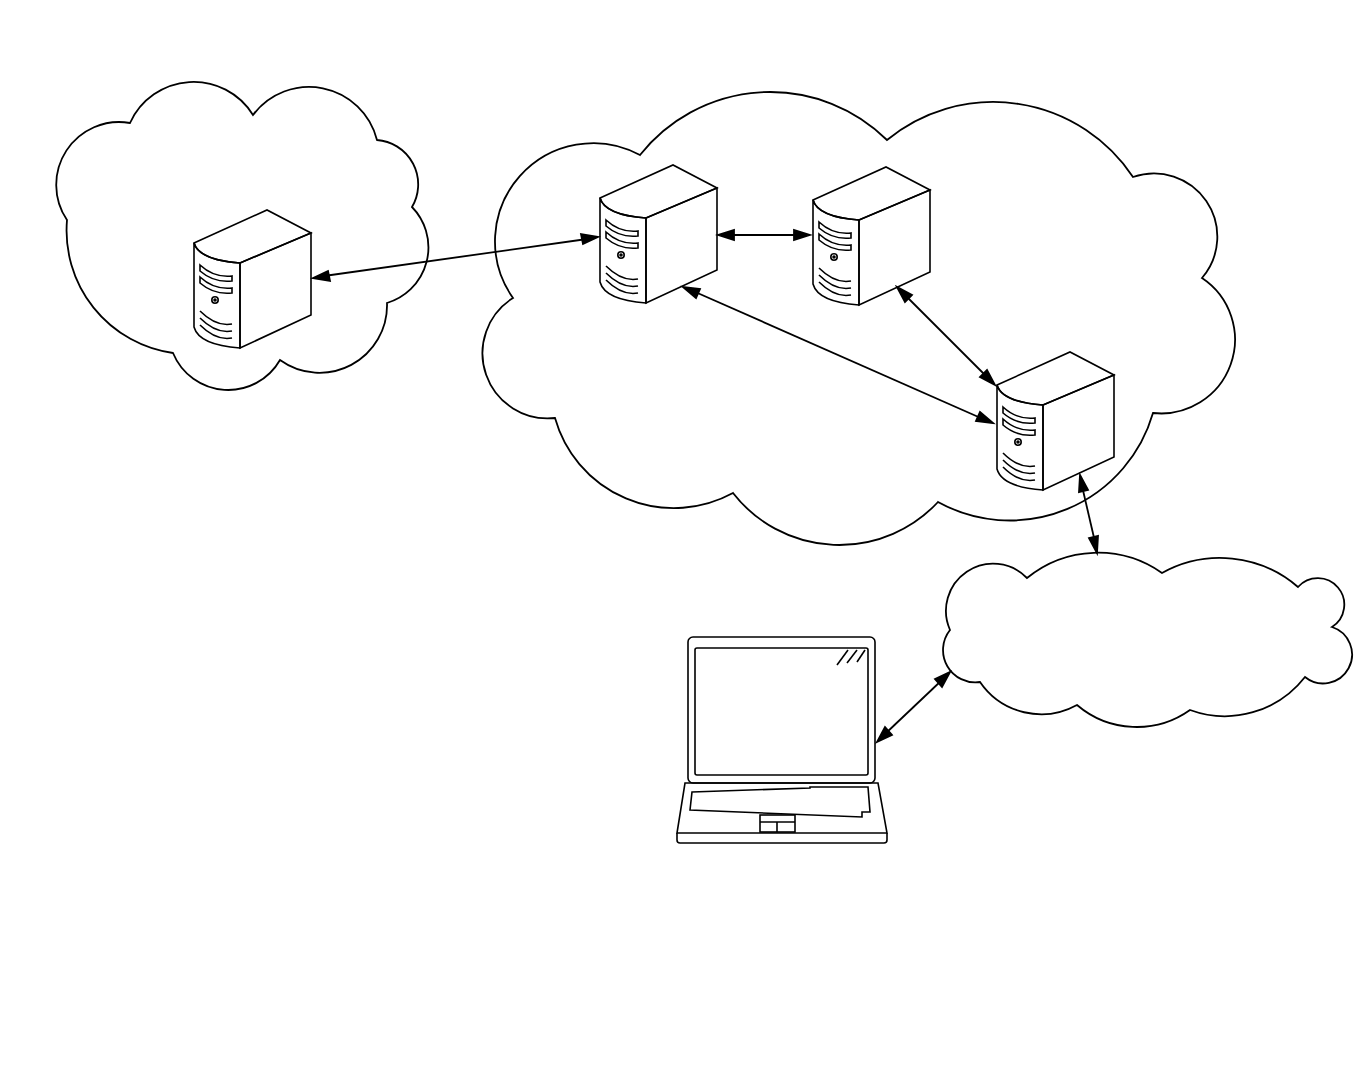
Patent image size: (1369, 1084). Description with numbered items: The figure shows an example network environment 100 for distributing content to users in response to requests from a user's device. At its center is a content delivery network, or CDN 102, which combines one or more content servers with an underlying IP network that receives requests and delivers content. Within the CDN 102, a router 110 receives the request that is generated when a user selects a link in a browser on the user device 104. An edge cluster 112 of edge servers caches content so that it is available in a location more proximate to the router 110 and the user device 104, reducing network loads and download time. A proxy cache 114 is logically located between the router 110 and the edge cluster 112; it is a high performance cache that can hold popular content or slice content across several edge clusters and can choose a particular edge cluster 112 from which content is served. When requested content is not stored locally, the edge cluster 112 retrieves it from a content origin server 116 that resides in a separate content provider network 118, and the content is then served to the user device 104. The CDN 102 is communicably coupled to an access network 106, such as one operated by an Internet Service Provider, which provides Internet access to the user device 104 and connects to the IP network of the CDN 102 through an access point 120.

The network environment 100 is at (1215, 168).
The content delivery network (CDN) 102 is at (853, 531).
The user device 104 is at (875, 765).
The access network 106 is at (1167, 667).
The router 110 is at (1113, 400).
The edge cluster 112 is at (660, 302).
The proxy cache 114 is at (928, 210).
The content origin server 116 is at (193, 290).
The content provider network 118 is at (272, 200).
The access point 120 is at (1097, 530).